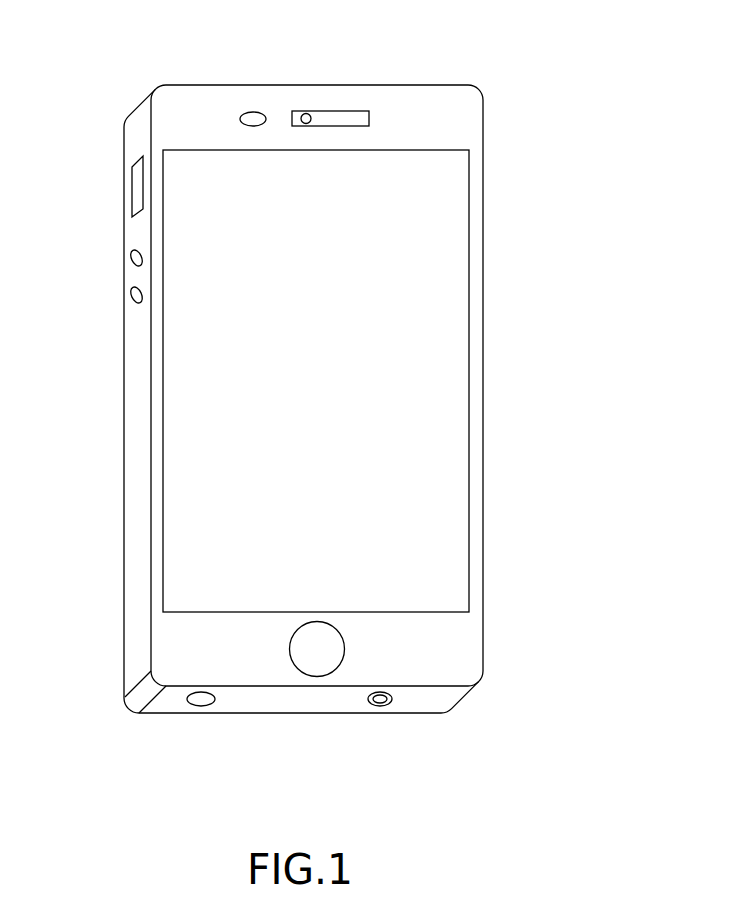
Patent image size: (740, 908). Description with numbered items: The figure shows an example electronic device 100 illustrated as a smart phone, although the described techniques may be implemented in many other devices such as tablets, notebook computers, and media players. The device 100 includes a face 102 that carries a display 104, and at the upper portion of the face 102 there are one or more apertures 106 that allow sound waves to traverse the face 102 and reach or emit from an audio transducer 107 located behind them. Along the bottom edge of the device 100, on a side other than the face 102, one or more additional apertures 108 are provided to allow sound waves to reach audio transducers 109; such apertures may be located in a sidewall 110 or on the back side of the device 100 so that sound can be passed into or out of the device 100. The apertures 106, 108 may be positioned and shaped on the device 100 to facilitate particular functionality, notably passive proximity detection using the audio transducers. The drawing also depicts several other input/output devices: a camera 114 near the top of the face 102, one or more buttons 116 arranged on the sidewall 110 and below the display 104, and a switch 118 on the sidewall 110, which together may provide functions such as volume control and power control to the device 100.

The electronic device 100 is at (571, 137).
The face 102 is at (477, 628).
The display 104 is at (469, 433).
The apertures 106 is at (337, 117).
The audio transducer 107 is at (306, 113).
The apertures 108 is at (201, 706).
The audio transducers 109 is at (383, 701).
The sidewall 110 is at (124, 118).
The camera 114 is at (253, 112).
The buttons 116 is at (133, 262).
The switches 118 is at (140, 192).